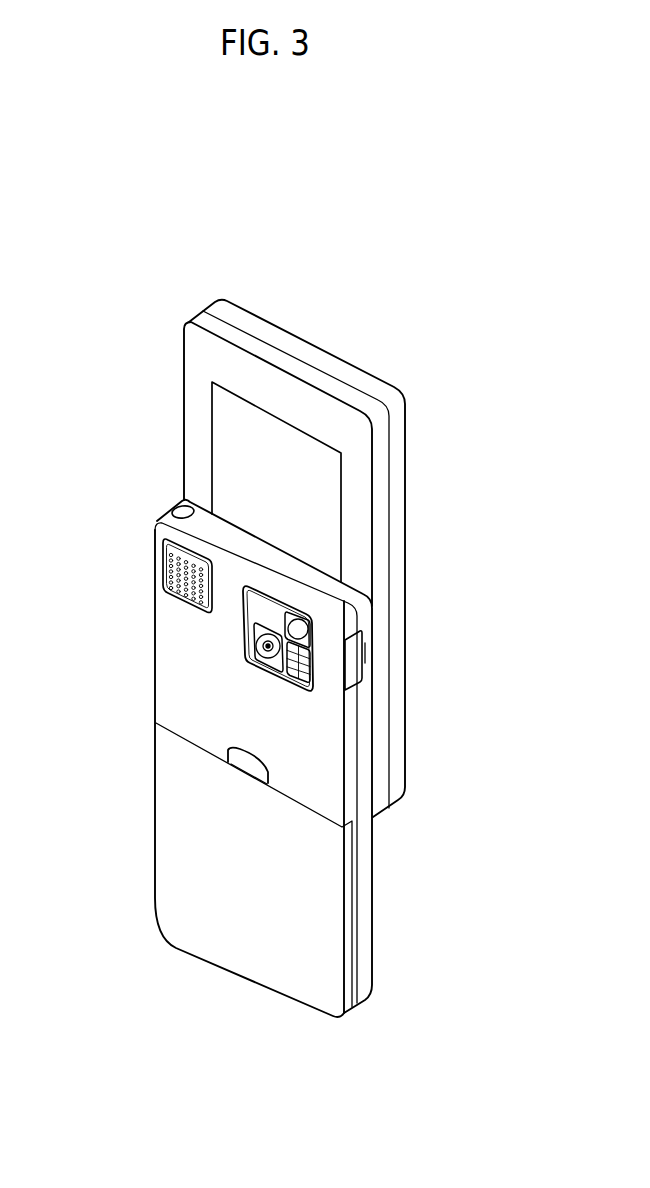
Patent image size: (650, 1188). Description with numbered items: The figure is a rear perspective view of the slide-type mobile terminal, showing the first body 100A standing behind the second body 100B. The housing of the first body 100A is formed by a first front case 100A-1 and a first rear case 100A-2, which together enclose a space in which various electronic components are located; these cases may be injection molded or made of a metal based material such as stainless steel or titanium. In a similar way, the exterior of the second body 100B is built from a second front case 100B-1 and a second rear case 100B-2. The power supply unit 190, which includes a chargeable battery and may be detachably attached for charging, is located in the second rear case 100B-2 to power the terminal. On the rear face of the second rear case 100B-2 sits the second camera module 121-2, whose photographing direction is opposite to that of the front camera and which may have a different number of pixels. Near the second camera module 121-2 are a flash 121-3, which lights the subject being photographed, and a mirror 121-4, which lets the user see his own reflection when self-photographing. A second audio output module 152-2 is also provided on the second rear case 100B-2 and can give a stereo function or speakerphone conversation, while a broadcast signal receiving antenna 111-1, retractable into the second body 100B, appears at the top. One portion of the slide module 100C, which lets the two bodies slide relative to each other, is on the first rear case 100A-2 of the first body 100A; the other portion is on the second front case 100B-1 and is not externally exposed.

The first body 100A is at (238, 535).
The first front case 100A-1 is at (217, 309).
The first rear case 100A-2 is at (202, 318).
The slide module 100C is at (219, 468).
The broadcast signal receiving antenna 111-1 is at (178, 509).
The second audio output module 152-2 is at (173, 574).
The second body 100B is at (280, 746).
The second front case 100B-1 is at (367, 838).
The second rear case 100B-2 is at (349, 792).
The power supply unit 190 is at (166, 821).
The second camera module 121-2 is at (270, 648).
The flash 121-3 is at (308, 688).
The mirror 121-4 is at (300, 626).